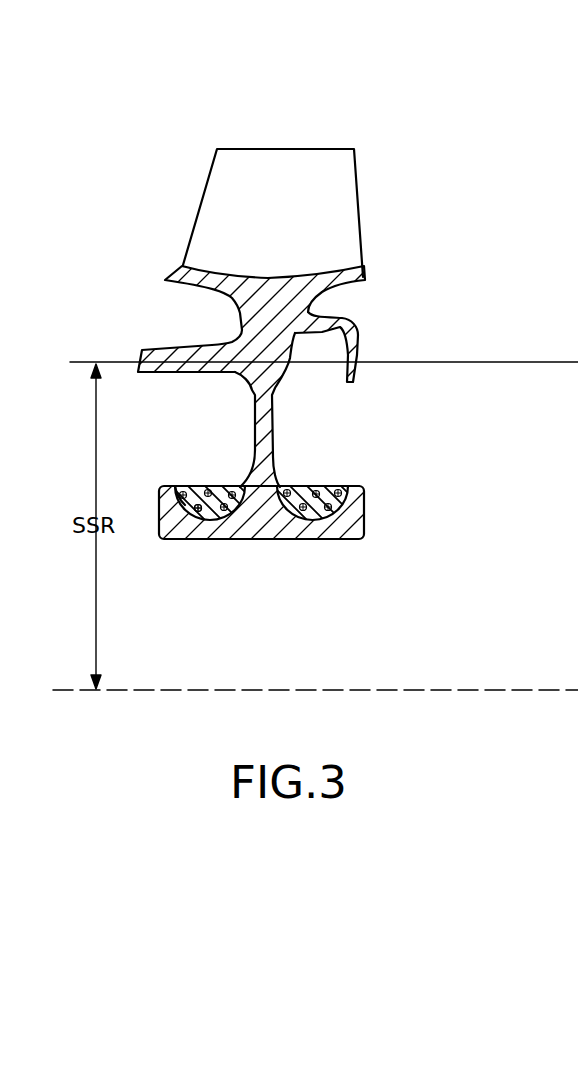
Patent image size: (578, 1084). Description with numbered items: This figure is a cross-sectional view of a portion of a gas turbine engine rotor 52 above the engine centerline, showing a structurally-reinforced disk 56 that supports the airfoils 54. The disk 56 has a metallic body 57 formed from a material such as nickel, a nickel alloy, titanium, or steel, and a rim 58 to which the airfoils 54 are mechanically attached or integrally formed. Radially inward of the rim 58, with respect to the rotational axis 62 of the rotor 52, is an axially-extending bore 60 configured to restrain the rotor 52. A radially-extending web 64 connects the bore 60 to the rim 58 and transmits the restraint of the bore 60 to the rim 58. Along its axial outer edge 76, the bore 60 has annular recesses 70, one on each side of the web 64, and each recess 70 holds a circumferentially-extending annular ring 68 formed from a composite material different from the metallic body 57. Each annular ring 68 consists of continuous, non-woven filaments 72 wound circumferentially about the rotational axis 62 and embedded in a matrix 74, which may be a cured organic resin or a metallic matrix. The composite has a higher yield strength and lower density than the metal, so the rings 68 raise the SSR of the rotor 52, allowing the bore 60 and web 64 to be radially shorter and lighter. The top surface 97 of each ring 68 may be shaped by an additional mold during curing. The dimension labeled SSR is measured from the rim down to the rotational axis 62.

The rotor 52 is at (430, 104).
The airfoils 54 is at (357, 214).
The structurally-reinforced disk 56 is at (389, 401).
The body 57 is at (338, 322).
The rim 58 is at (363, 277).
The bore 60 is at (265, 530).
The rotational axis 62 is at (458, 690).
The web 64 is at (263, 418).
The annular rings 68 is at (227, 488).
The annular recess 70 is at (193, 521).
The filaments 72 is at (325, 488).
The matrix 74 is at (343, 487).
The outer edge 76 is at (178, 494).
The top surface 97 is at (196, 505).